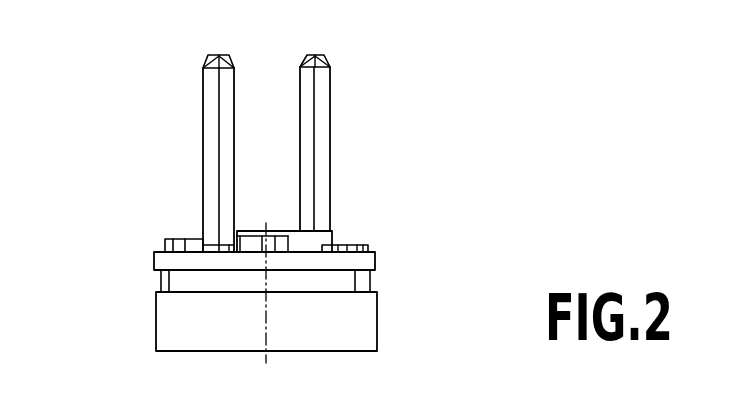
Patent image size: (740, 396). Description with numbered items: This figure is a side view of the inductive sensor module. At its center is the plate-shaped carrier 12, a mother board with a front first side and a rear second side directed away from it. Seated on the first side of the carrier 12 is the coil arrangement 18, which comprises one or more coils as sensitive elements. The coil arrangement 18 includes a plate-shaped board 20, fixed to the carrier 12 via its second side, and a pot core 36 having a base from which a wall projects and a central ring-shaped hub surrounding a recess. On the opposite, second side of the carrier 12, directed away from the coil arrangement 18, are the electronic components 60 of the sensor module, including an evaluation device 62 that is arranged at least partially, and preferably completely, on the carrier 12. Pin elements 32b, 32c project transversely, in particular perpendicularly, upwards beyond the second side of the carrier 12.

The carrier 12 is at (367, 260).
The coil arrangement 18 is at (229, 309).
The board 20 is at (347, 281).
The pot core 36 is at (328, 337).
The electronic components 60 is at (273, 245).
The evaluation device 62 is at (156, 209).
The pin element 32b is at (320, 82).
The pin element 32c is at (225, 73).